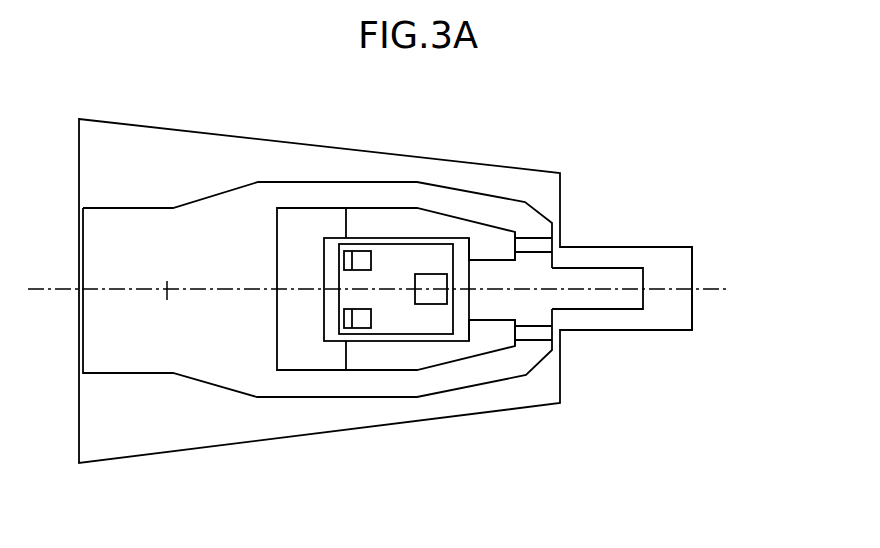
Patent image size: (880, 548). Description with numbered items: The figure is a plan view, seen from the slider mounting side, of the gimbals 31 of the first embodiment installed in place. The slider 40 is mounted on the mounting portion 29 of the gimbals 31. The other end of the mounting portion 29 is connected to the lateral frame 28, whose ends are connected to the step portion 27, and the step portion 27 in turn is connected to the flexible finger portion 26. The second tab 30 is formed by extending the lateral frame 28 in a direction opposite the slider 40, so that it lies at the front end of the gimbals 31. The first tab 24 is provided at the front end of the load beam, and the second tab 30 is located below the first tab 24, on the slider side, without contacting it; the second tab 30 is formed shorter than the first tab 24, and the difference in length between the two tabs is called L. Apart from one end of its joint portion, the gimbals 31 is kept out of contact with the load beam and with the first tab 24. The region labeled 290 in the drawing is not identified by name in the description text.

The first tab 24 is at (675, 273).
The flexible finger portion 26 is at (372, 194).
The step portion 27 is at (533, 242).
The lateral frame 28 is at (533, 277).
The mounting portion 29 is at (461, 252).
The second tab 30 is at (597, 300).
The gimbals 31 is at (200, 172).
The slider 40 is at (386, 318).
The carrier frame 290 is at (428, 355).